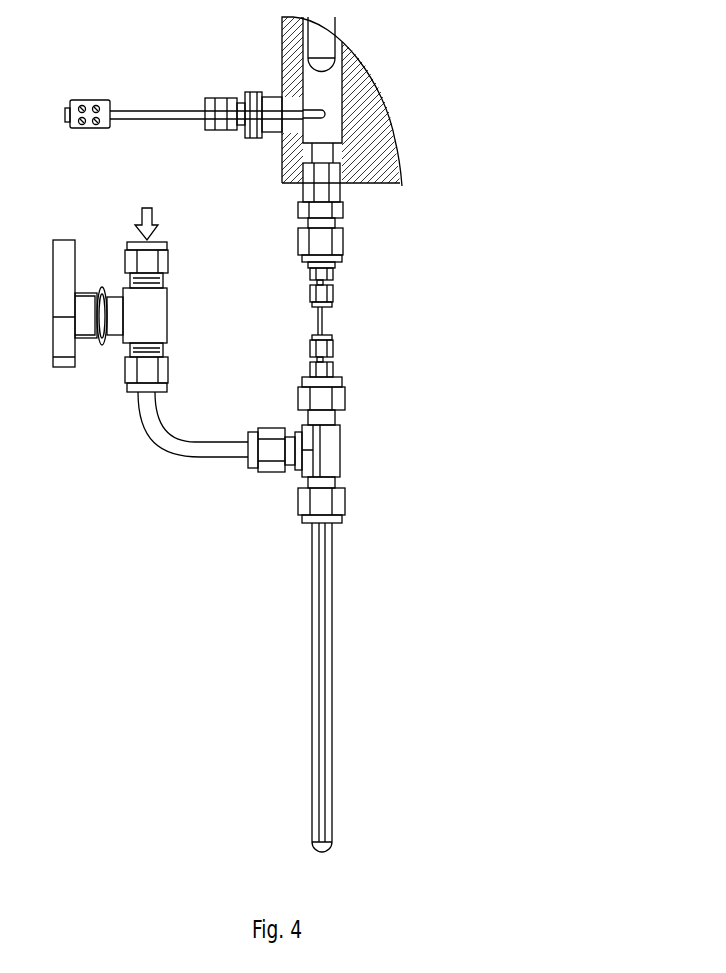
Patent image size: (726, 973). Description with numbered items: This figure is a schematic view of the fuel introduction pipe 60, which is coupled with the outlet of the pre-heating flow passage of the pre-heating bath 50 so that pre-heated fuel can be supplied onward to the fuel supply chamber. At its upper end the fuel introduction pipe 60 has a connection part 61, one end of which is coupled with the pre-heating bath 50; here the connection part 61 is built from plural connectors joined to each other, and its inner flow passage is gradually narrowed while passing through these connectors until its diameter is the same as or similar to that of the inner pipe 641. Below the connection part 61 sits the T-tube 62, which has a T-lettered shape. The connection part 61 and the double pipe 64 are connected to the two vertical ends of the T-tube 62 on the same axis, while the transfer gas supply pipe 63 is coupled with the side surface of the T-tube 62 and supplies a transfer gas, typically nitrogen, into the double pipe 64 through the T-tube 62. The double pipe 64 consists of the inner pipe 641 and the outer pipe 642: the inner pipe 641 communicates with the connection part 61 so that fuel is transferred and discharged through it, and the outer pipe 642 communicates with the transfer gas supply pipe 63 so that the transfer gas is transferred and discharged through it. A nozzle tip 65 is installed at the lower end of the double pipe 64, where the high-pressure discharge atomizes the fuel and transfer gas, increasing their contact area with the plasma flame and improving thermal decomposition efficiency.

The pre-heating bath 50 is at (282, 72).
The fuel introduction pipe 60 is at (417, 599).
The connection part 61 is at (322, 315).
The T-tube 62 is at (337, 456).
The transfer gas supply pipe 63 is at (200, 453).
The double pipe 64 is at (240, 682).
The inner pipe 641 is at (312, 708).
The outer pipe 642 is at (323, 618).
The nozzle tip 65 is at (327, 851).